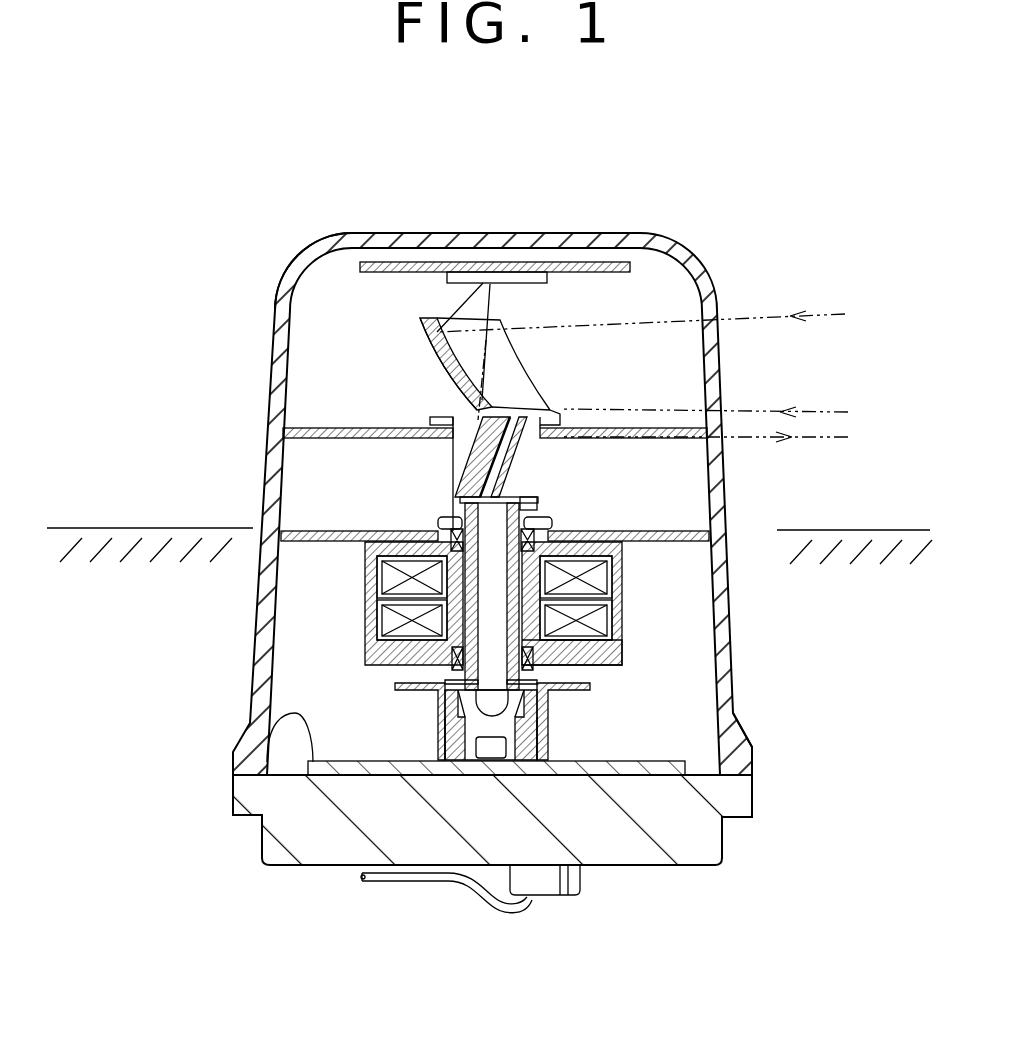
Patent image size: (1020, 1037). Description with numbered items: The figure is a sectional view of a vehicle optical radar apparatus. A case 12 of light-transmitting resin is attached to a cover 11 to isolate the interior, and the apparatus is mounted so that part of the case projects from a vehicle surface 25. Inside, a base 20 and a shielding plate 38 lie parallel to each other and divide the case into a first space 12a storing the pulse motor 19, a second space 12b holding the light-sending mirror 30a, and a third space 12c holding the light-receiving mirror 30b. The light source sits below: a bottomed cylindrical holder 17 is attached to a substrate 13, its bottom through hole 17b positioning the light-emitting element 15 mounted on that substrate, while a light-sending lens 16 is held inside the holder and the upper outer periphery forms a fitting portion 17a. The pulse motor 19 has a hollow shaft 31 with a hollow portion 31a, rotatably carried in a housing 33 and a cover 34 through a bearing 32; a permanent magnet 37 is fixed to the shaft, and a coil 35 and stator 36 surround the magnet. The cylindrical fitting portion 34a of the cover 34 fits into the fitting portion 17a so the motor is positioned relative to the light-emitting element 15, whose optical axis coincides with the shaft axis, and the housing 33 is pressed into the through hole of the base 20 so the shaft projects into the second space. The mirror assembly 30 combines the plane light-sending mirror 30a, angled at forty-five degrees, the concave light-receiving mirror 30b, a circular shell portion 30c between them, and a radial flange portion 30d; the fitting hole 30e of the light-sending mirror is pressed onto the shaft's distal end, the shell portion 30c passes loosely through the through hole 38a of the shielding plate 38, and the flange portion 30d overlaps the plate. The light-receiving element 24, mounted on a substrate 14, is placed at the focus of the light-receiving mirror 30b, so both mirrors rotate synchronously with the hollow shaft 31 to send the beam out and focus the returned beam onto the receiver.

The cover 11 is at (752, 797).
The case 12 is at (740, 738).
The first space 12a is at (705, 757).
The second space 12b is at (298, 450).
The third space 12c is at (337, 262).
The substrate 13 is at (262, 716).
The substrate 14 is at (628, 272).
The light-emitting element 15 is at (467, 772).
The light-sending lens 16 is at (518, 722).
The holder 17 is at (562, 758).
The fitting portion 17a is at (445, 712).
The through hole 17b is at (492, 762).
The pulse motor 19 is at (362, 565).
The base 20 is at (323, 532).
The light-receiving element 24 is at (450, 282).
The vehicle surface 25 is at (868, 530).
The mirror assembly 30 is at (428, 343).
The light-sending mirror 30a is at (538, 500).
The light-receiving mirror 30b is at (463, 372).
The shell portion 30c is at (480, 432).
The flange portion 30d is at (430, 420).
The fitting hole 30e is at (467, 470).
The hollow shaft 31 is at (460, 668).
The hollow portion 31a is at (466, 680).
The bearing 32 is at (548, 522).
The housing 33 is at (622, 550).
The cover 34 is at (622, 655).
The cylindrical fitting portion 34a is at (563, 721).
The coil 35 is at (380, 577).
The stator 36 is at (612, 582).
The permanent magnet 37 is at (375, 645).
The shielding plate 38 is at (667, 432).
The through hole 38a is at (540, 443).